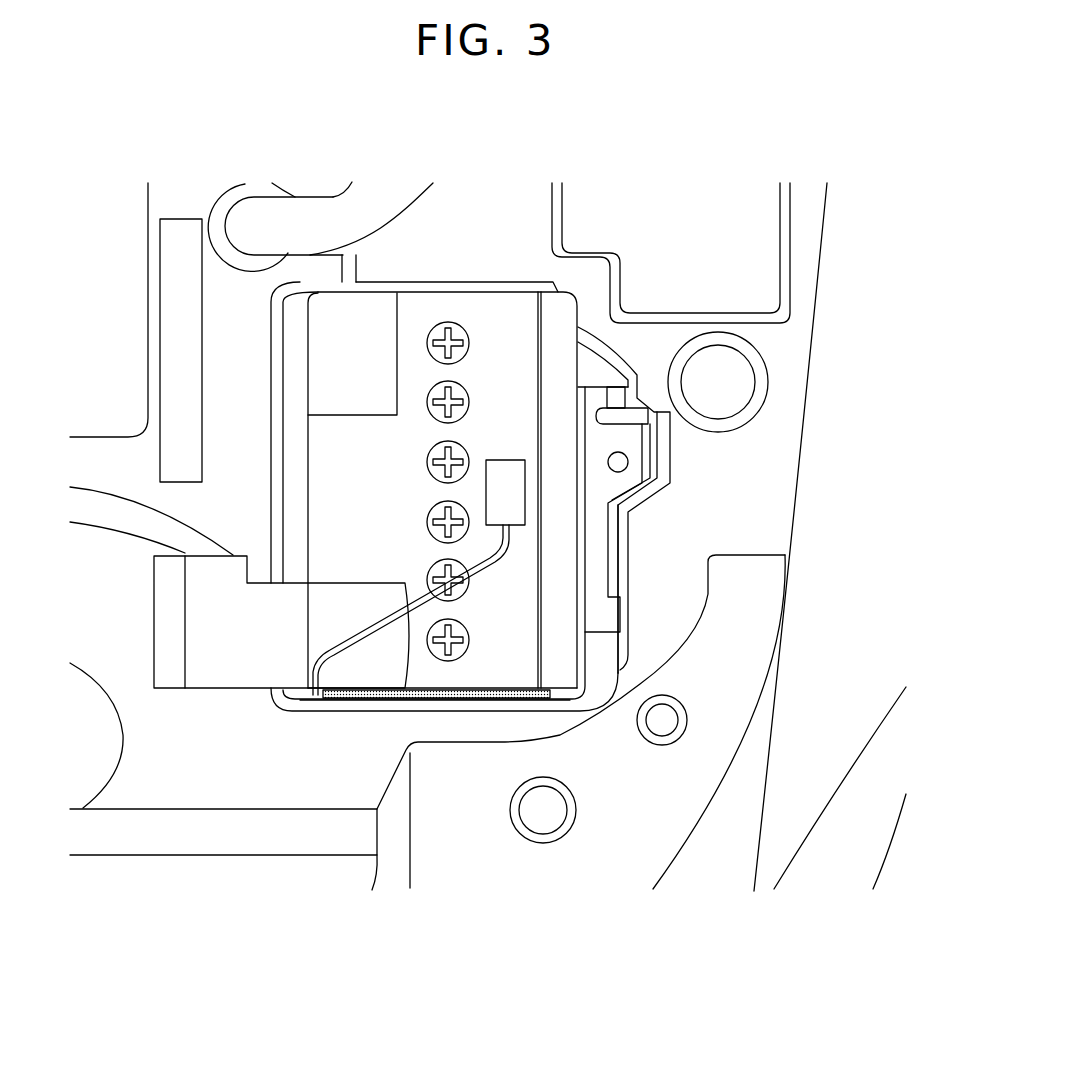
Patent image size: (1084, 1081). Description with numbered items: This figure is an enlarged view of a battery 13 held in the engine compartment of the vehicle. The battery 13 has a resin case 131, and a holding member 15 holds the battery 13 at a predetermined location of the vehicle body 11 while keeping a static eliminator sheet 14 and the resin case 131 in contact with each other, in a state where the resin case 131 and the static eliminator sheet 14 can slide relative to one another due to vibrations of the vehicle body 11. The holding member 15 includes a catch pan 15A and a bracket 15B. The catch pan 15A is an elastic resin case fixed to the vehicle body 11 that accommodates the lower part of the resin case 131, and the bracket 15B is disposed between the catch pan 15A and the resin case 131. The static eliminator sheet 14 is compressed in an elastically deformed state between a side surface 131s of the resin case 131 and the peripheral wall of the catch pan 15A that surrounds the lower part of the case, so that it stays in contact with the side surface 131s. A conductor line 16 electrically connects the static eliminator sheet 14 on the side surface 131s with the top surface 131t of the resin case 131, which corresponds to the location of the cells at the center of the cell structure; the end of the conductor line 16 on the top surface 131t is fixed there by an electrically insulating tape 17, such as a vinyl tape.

The vehicle body 11 is at (213, 832).
The battery 13 is at (356, 486).
The resin case 131 is at (465, 291).
The top surface 131t is at (505, 327).
The side surface 131s is at (385, 698).
The static eliminator sheet 14 is at (441, 690).
The holding member 15 is at (749, 629).
The catch pan 15A is at (605, 697).
The bracket 15B is at (608, 482).
The conductor line 16 is at (362, 640).
The electrically insulating tape 17 is at (508, 507).